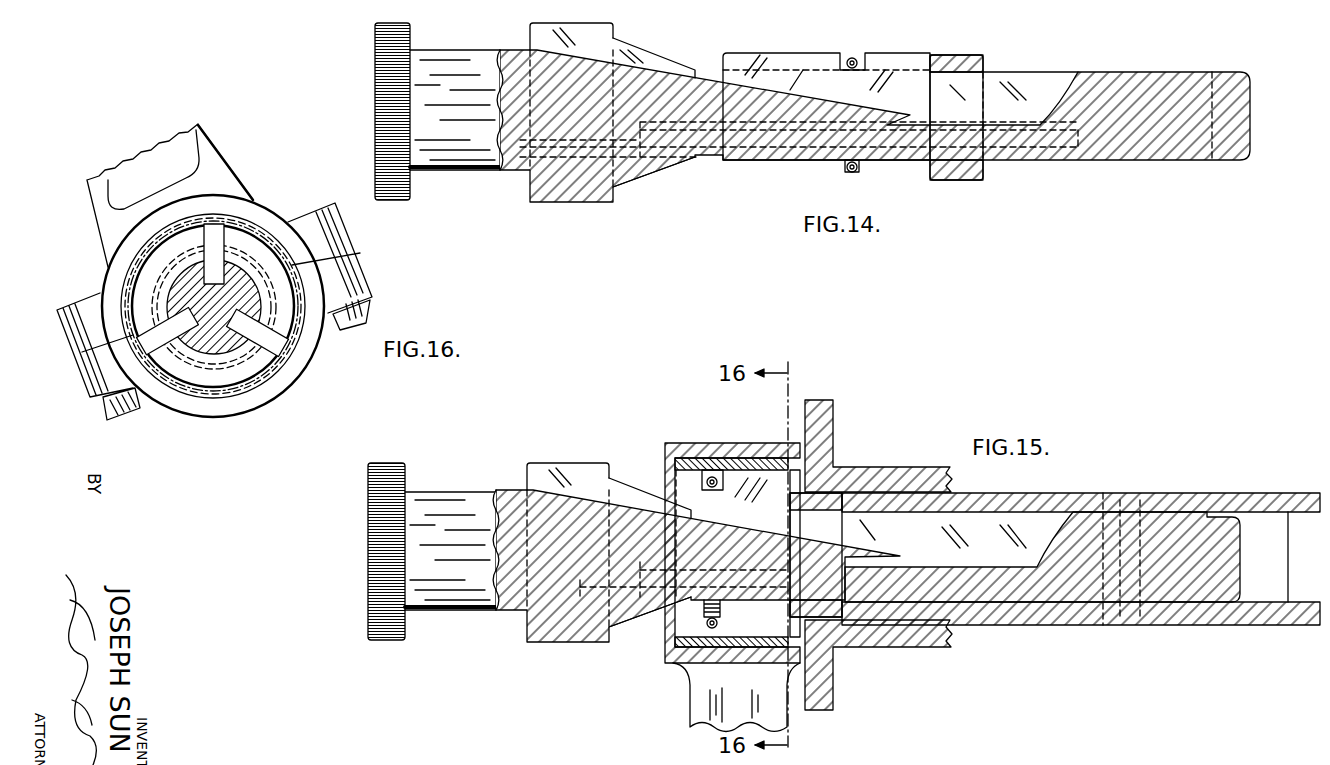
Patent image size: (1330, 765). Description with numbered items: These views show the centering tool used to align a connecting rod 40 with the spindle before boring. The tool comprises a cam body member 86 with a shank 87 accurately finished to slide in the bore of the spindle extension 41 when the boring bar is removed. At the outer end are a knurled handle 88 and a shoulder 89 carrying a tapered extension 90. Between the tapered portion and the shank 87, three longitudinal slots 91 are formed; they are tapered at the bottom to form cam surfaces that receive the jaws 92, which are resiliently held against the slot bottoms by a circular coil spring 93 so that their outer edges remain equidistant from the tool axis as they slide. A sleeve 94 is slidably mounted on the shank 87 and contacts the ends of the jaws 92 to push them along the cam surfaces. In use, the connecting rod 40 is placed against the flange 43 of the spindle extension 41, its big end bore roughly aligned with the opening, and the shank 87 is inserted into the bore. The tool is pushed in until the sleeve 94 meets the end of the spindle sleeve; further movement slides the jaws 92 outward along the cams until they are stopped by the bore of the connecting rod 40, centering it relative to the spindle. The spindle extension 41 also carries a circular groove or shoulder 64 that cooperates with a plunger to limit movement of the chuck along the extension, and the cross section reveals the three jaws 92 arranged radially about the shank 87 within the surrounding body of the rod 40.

In FIG. 16, the connecting rod 40 is at (277, 403).
In FIG. 15, the connecting rod 40 is at (692, 698).
In FIG. 15, the spindle extension 41 is at (1036, 492).
In FIG. 15, the flange 43 is at (828, 400).
In FIG. 15, the circular groove or shoulder 64 is at (1110, 623).
In FIG. 14, the cam body member 86 is at (492, 172).
In FIG. 15, the cam body member 86 is at (455, 495).
In FIG. 14, the shank 87 is at (1168, 162).
In FIG. 16, the shank 87 is at (210, 347).
In FIG. 15, the shank 87 is at (1180, 515).
In FIG. 14, the knurled handle 88 is at (387, 203).
In FIG. 15, the knurled handle 88 is at (412, 438).
In FIG. 14, the shoulder 89 is at (615, 199).
In FIG. 15, the shoulder 89 is at (612, 641).
In FIG. 14, the tapered extension 90 is at (650, 178).
In FIG. 15, the tapered extension 90 is at (648, 622).
In FIG. 14, the longitudinal slots 91 is at (633, 60).
In FIG. 15, the longitudinal slots 91 is at (696, 555).
In FIG. 14, the jaws 92 is at (890, 60).
In FIG. 16, the jaws 92 is at (220, 263).
In FIG. 15, the jaws 92 is at (747, 472).
In FIG. 14, the circular coil spring 93 is at (853, 57).
In FIG. 15, the circular coil spring 93 is at (713, 473).
In FIG. 14, the sleeve 94 is at (947, 56).
In FIG. 15, the sleeve 94 is at (822, 495).